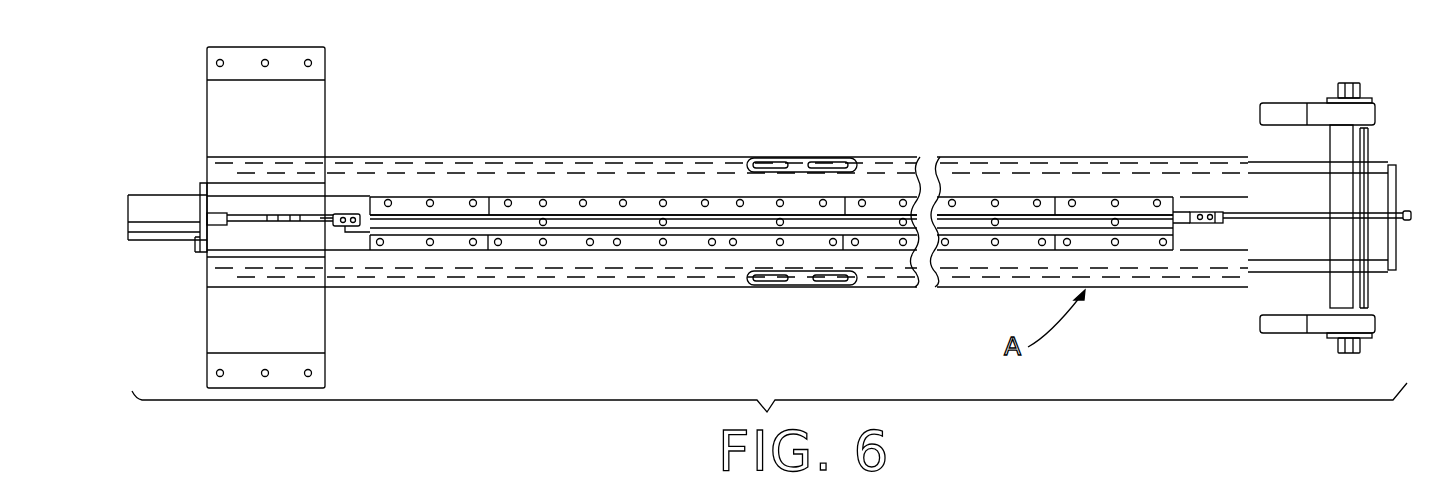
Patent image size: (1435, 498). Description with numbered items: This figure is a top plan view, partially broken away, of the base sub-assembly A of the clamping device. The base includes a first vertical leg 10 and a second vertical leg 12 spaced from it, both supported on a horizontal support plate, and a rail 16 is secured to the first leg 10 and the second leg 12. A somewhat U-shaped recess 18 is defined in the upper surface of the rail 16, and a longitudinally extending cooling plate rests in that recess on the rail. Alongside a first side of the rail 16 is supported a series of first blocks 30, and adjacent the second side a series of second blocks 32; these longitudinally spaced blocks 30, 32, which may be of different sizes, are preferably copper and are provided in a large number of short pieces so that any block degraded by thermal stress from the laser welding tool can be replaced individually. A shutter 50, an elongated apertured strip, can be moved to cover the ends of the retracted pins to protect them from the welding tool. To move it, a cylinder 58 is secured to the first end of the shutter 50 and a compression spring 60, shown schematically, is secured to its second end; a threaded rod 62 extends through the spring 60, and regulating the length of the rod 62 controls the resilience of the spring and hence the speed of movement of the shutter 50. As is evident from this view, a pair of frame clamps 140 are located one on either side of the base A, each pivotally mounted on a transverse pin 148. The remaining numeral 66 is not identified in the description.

The first vertical leg 10 is at (1270, 165).
The second vertical leg 12 is at (1278, 268).
The rail 16 is at (728, 185).
The U-shaped recess 18 is at (563, 263).
The first block 30 is at (447, 203).
The second block 32 is at (458, 240).
The shutter 50 is at (802, 222).
The cylinder 58 is at (152, 232).
The compression spring 60 is at (1340, 210).
The threaded rod 62 is at (1400, 222).
The mounting plate 66 is at (303, 310).
The frame clamp 140 is at (1283, 112).
The transverse pin 148 is at (1355, 352).